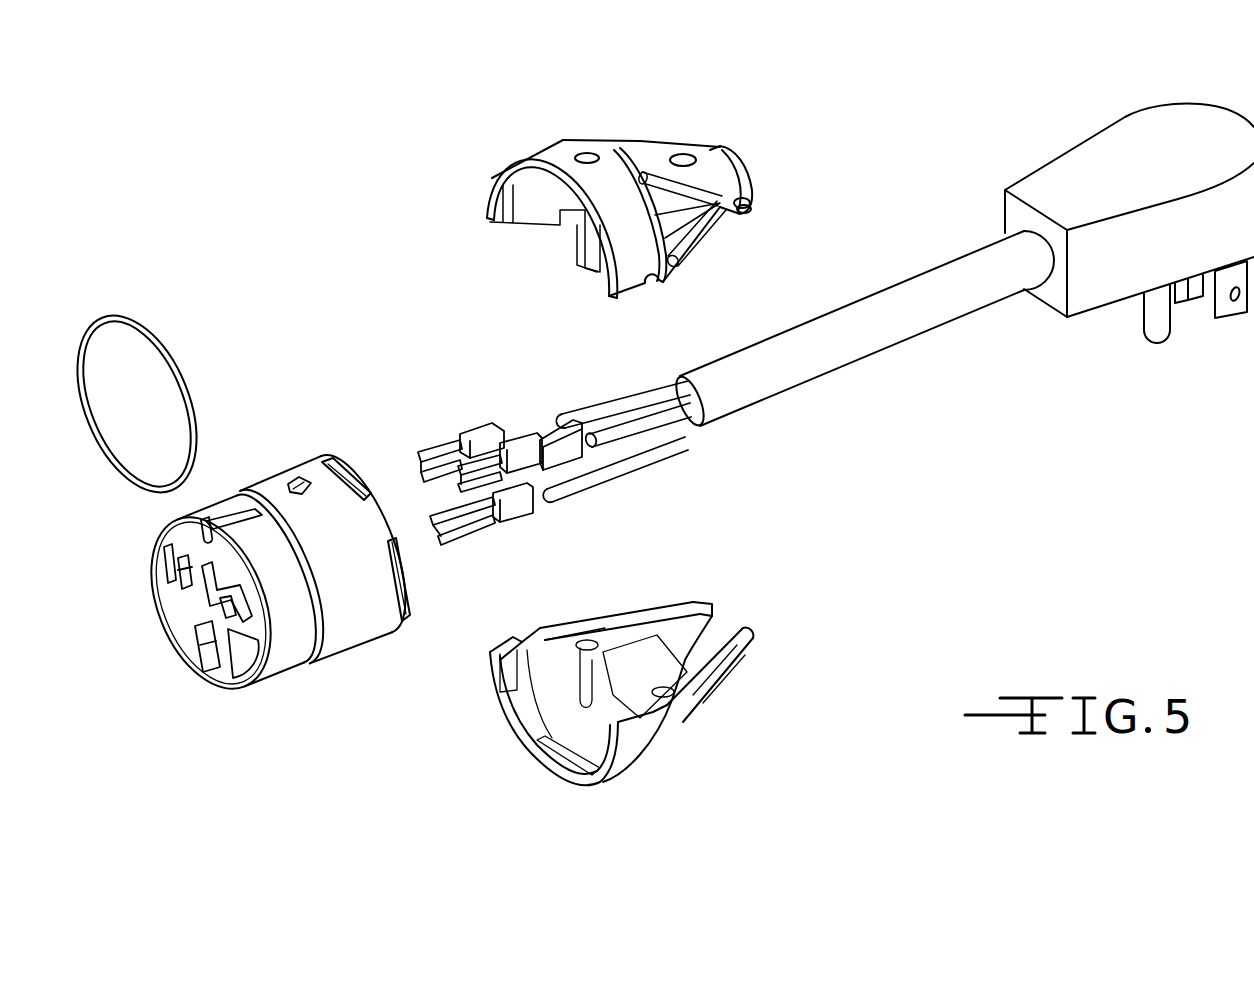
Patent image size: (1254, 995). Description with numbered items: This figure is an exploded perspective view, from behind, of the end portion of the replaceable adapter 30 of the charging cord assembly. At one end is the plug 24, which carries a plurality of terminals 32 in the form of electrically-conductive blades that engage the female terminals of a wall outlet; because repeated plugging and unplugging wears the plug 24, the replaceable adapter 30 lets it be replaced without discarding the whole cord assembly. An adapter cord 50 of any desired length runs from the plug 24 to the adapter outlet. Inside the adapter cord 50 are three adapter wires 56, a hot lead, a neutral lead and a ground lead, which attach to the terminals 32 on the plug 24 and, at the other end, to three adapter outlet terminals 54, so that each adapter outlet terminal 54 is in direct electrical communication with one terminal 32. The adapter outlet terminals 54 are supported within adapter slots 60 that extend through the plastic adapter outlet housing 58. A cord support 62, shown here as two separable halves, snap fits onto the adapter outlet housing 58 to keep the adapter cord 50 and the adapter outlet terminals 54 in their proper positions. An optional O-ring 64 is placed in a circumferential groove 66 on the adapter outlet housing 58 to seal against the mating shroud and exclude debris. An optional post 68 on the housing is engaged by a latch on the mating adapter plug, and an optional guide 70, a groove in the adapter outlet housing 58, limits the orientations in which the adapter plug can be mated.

The plug 24 is at (1103, 163).
The replaceable adapter 30 is at (875, 116).
The terminals 32 is at (1137, 322).
The adapter cord 50 is at (800, 367).
The adapter outlet terminals 54 is at (478, 428).
The adapter wires 56 is at (630, 440).
The adapter outlet housing 58 is at (340, 630).
The adapter slots 60 is at (163, 582).
The cord support 62 is at (610, 183).
The O-ring 64 is at (121, 318).
The circumferential groove 66 is at (306, 660).
The post 68 is at (297, 480).
The guide 70 is at (210, 522).